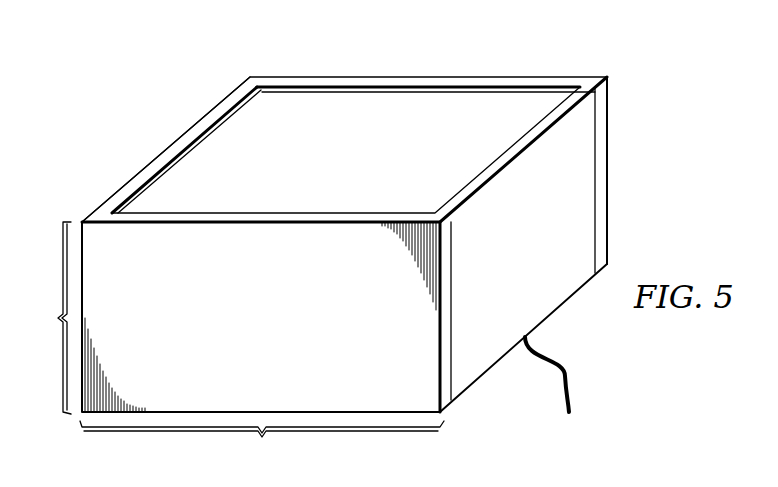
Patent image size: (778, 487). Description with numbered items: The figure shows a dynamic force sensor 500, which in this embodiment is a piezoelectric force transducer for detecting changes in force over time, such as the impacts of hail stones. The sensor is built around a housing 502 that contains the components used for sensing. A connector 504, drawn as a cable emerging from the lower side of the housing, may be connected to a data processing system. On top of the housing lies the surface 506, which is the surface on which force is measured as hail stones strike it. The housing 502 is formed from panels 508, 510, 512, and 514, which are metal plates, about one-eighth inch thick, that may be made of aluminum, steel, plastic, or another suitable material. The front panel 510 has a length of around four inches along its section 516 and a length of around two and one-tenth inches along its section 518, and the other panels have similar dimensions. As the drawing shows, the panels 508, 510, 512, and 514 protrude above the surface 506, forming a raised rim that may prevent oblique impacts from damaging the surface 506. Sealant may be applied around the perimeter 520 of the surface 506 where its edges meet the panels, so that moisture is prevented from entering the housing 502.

The dynamic force sensor 500 is at (352, 238).
The housing 502 is at (616, 170).
The connector 504 is at (571, 403).
The surface 506 is at (366, 162).
The panel 508 is at (537, 84).
The panel 510 is at (280, 332).
The panel 512 is at (163, 150).
The panel 514 is at (546, 254).
The section 516 is at (262, 444).
The section 518 is at (43, 318).
The perimeter 520 is at (224, 121).